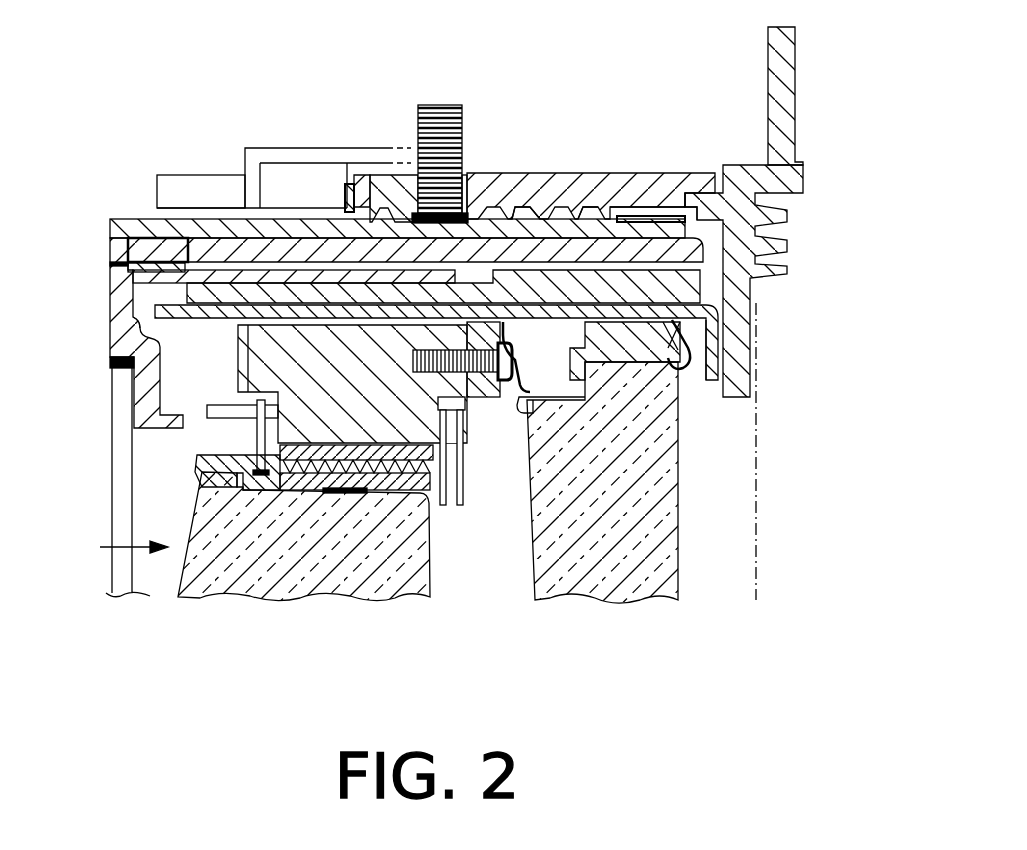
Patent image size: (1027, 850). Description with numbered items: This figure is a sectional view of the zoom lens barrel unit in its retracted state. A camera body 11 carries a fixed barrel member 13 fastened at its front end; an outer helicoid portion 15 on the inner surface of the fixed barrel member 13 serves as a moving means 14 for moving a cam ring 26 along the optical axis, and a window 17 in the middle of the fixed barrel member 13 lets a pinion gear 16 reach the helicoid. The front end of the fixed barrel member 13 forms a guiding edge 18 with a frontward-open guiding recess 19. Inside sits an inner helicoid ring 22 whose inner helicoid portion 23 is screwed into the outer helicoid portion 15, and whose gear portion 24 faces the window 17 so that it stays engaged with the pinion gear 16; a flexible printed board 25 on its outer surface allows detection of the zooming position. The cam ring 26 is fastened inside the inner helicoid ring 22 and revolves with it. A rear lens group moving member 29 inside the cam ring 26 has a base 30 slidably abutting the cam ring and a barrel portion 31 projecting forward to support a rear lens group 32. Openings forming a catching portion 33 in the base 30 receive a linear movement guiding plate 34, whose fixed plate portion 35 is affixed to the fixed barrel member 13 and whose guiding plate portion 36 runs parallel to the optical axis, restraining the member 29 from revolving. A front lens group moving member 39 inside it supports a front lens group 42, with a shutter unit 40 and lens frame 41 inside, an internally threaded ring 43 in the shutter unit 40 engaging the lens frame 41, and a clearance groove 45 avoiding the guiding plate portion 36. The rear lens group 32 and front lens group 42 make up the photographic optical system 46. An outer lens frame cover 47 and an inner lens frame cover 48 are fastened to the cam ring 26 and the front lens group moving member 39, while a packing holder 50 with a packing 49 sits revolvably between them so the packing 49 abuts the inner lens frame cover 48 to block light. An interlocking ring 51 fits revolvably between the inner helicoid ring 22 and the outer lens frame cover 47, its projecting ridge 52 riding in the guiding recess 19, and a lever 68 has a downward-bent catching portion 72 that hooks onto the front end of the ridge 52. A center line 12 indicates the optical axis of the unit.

The camera body 11 is at (797, 72).
The frame center line 12 is at (758, 548).
The fixed barrel member 13 is at (495, 185).
The moving means 14 is at (548, 200).
The outer helicoid portion 15 is at (588, 214).
The pinion gear 16 is at (440, 105).
The window 17 is at (468, 176).
The guiding edge 18 is at (170, 175).
The guiding recess 19 is at (192, 185).
The inner helicoid ring 22 is at (640, 225).
The inner helicoid portion 23 is at (603, 213).
The gear portion 24 is at (410, 214).
The flexible printed board 25 is at (682, 212).
The cam ring 26 is at (788, 233).
The rear lens group moving member 29 is at (752, 288).
The base 30 is at (553, 292).
The barrel portion 31 is at (165, 294).
The rear lens group 32 is at (613, 592).
The catching portion 33 is at (684, 358).
The linear movement guiding plate 34 is at (210, 312).
The fixed plate portion 35 is at (722, 354).
The guiding plate portion 36 is at (124, 366).
The front lens group moving member 39 is at (478, 388).
The shutter unit 40 is at (240, 380).
The lens frame 41 is at (200, 465).
The front lens group 42 is at (303, 592).
The internally threaded ring 43 is at (420, 462).
The clearance groove 45 is at (504, 328).
The photographic optical system 46 is at (24, 560).
The outer lens frame cover 47 is at (128, 217).
The inner lens frame cover 48 is at (112, 338).
The packing 49 is at (133, 266).
The packing holder 50 is at (130, 248).
The interlocking ring 51 is at (343, 205).
The projecting ridge 52 is at (352, 184).
The lever 68 is at (268, 148).
The catching portion 72 is at (238, 185).